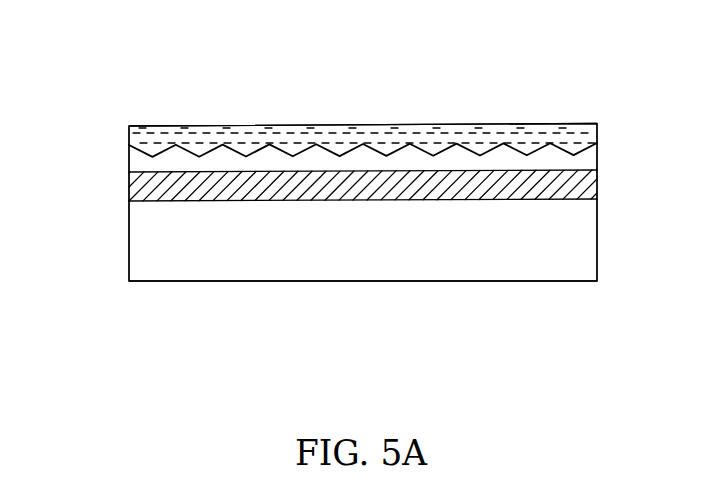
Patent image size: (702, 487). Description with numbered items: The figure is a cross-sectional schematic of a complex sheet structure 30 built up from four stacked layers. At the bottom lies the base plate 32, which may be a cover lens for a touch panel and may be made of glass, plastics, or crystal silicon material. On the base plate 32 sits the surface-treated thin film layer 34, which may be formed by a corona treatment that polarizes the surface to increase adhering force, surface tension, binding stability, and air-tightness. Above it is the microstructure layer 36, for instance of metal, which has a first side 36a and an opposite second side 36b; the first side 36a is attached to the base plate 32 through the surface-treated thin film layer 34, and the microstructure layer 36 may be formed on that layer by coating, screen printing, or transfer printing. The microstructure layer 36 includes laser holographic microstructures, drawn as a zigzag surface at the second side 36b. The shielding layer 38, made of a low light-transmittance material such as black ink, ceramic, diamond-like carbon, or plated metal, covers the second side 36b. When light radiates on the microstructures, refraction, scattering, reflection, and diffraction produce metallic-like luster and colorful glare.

The complex sheet structure 30 is at (74, 45).
The base plate 32 is at (242, 261).
The surface-treated thin film layer 34 is at (130, 188).
The microstructure layer 36 is at (137, 163).
The first side 36a is at (547, 170).
The second side 36b is at (565, 134).
The shielding layer 38 is at (463, 135).